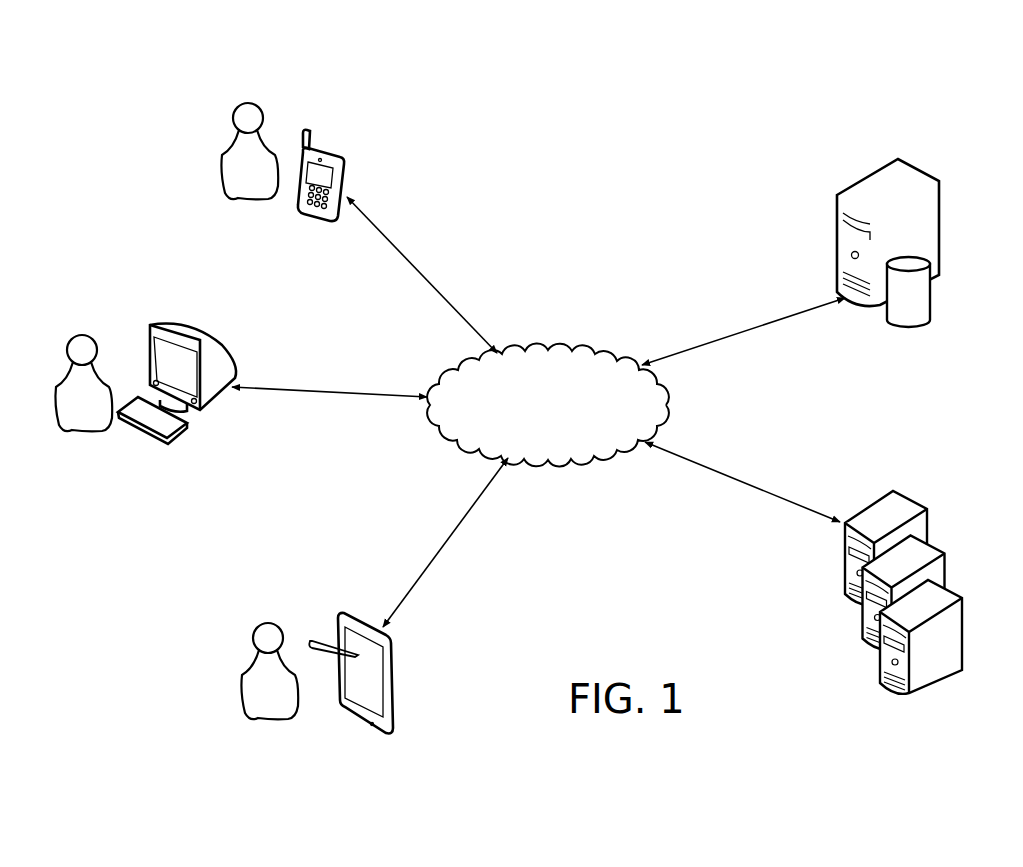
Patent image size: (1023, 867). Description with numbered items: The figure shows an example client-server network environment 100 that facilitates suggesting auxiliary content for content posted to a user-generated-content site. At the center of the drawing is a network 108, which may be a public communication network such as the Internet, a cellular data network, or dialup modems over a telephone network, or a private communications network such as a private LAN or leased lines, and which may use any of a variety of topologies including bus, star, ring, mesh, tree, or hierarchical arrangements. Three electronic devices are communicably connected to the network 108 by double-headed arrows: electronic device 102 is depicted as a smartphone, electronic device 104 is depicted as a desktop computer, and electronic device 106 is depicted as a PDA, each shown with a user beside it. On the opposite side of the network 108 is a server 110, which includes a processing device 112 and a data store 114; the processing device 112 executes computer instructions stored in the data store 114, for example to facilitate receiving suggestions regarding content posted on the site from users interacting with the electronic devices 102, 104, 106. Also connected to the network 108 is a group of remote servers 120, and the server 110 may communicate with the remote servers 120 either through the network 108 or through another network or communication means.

The network environment 100 is at (641, 138).
The electronic device 102 is at (333, 150).
The electronic device 104 is at (202, 335).
The electronic device 106 is at (347, 613).
The network 108 is at (549, 346).
The server 110 is at (899, 235).
The processing device 112 is at (917, 168).
The data store 114 is at (932, 308).
The remote servers 120 is at (843, 665).